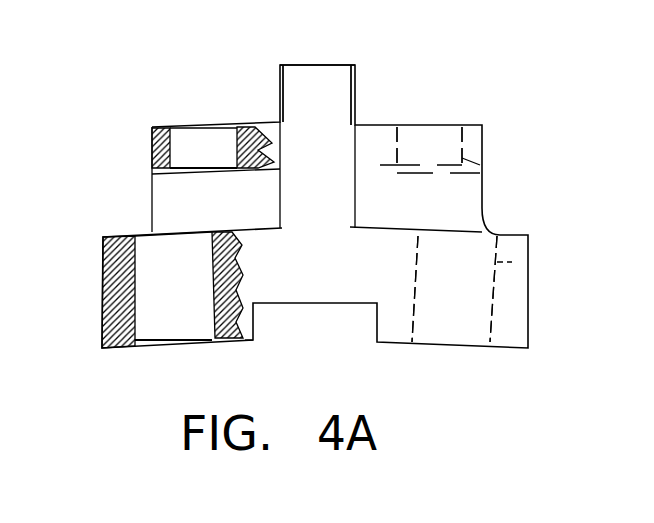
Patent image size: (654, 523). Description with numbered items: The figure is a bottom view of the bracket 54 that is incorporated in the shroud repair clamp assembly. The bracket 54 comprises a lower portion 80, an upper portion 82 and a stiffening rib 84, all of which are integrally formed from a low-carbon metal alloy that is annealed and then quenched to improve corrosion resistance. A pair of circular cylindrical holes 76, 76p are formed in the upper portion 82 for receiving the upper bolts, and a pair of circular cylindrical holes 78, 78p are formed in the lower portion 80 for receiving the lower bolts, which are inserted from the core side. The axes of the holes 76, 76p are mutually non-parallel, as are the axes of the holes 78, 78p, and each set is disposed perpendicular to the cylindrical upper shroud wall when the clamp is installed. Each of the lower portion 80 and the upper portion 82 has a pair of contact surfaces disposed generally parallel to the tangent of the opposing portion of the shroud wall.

The bracket 54 is at (472, 106).
The stiffening rib 84 is at (355, 88).
The upper portion 82 is at (152, 150).
The upper hole 76p is at (183, 68).
The circular cylindrical hole 76 is at (482, 163).
The lower portion 80 is at (103, 300).
The lower hole 78p is at (136, 258).
The circular cylindrical hole 78 is at (497, 262).